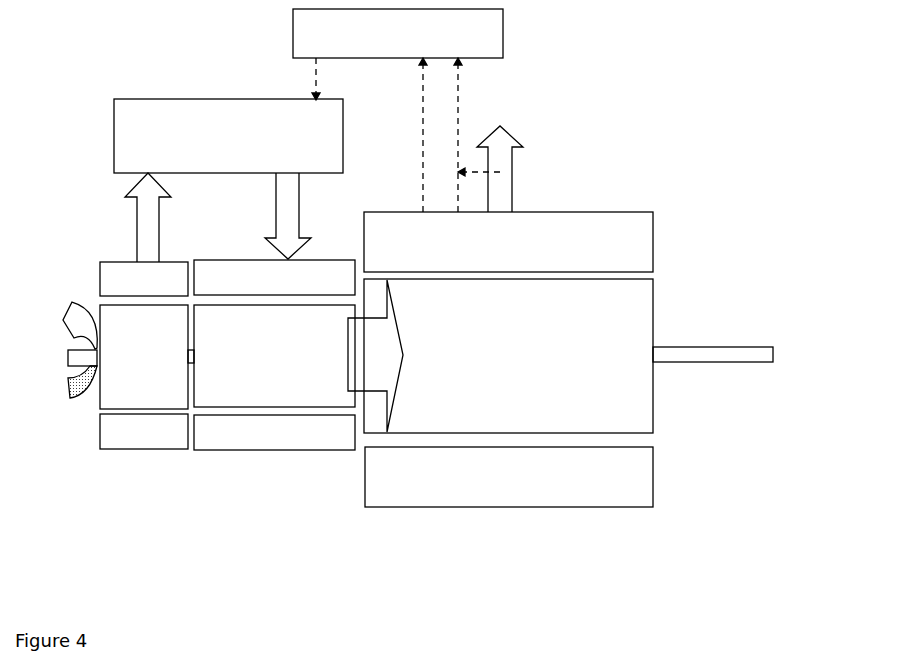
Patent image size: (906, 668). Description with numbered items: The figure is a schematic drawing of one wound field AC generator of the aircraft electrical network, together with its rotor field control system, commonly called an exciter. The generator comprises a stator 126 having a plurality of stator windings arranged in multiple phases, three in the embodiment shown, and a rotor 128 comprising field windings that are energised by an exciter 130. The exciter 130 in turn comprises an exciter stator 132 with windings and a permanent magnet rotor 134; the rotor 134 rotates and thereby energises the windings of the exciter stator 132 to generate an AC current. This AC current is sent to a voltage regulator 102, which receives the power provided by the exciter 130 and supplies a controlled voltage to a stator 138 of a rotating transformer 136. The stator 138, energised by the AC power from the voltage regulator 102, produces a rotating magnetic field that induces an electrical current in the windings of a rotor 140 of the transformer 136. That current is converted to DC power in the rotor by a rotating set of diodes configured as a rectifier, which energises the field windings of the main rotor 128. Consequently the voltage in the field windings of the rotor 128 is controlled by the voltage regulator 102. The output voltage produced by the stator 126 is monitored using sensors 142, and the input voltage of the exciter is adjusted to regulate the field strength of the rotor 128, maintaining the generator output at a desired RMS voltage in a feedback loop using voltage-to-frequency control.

The voltage regulator 102 is at (228, 98).
The sensors 142 is at (503, 28).
The stator 126 is at (568, 212).
The rotor 128 is at (653, 337).
The exciter 130 is at (188, 370).
The exciter stator 132 is at (100, 280).
The permanent magnet rotor 134 is at (72, 302).
The rotating transformer 136 is at (312, 465).
The stator of the rotating transformer 138 is at (275, 450).
The rotor of the transformer 140 is at (186, 356).